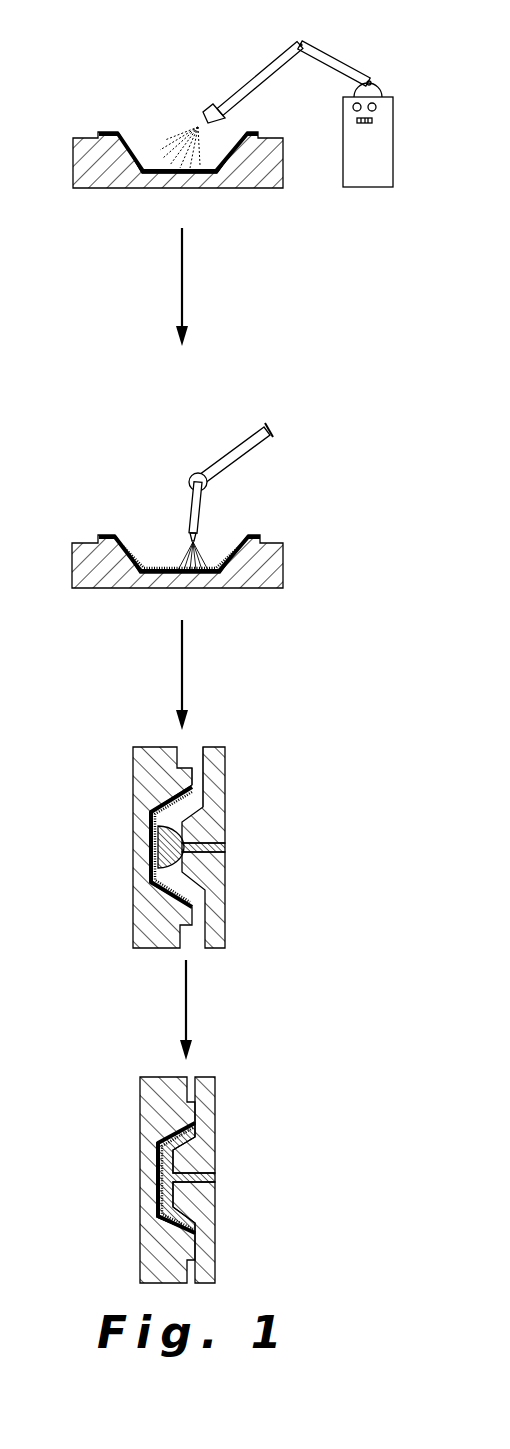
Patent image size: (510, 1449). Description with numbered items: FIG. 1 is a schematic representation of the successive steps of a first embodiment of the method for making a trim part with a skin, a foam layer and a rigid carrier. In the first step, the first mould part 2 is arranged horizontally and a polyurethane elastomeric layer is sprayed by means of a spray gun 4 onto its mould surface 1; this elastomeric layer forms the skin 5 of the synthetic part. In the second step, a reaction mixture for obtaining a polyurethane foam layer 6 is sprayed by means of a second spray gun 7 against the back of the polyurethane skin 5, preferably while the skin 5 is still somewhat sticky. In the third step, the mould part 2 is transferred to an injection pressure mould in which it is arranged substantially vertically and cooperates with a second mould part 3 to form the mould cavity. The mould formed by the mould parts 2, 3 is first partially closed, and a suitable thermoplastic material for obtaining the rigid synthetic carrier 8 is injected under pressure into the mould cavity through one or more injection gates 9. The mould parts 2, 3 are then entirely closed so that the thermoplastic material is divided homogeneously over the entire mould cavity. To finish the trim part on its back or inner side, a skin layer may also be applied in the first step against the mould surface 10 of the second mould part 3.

The mold cavity 1 is at (158, 180).
The lower mold half 2 is at (245, 181).
The upper mold half 3 is at (213, 890).
The spray robot 4 is at (274, 65).
The release coating layer 5 is at (126, 141).
The sprayed skin layer 6 is at (130, 549).
The spray gun arm 7 is at (243, 451).
The molded plastic material 8 is at (152, 866).
The runner 9 is at (225, 848).
The vent gap 10 is at (196, 808).